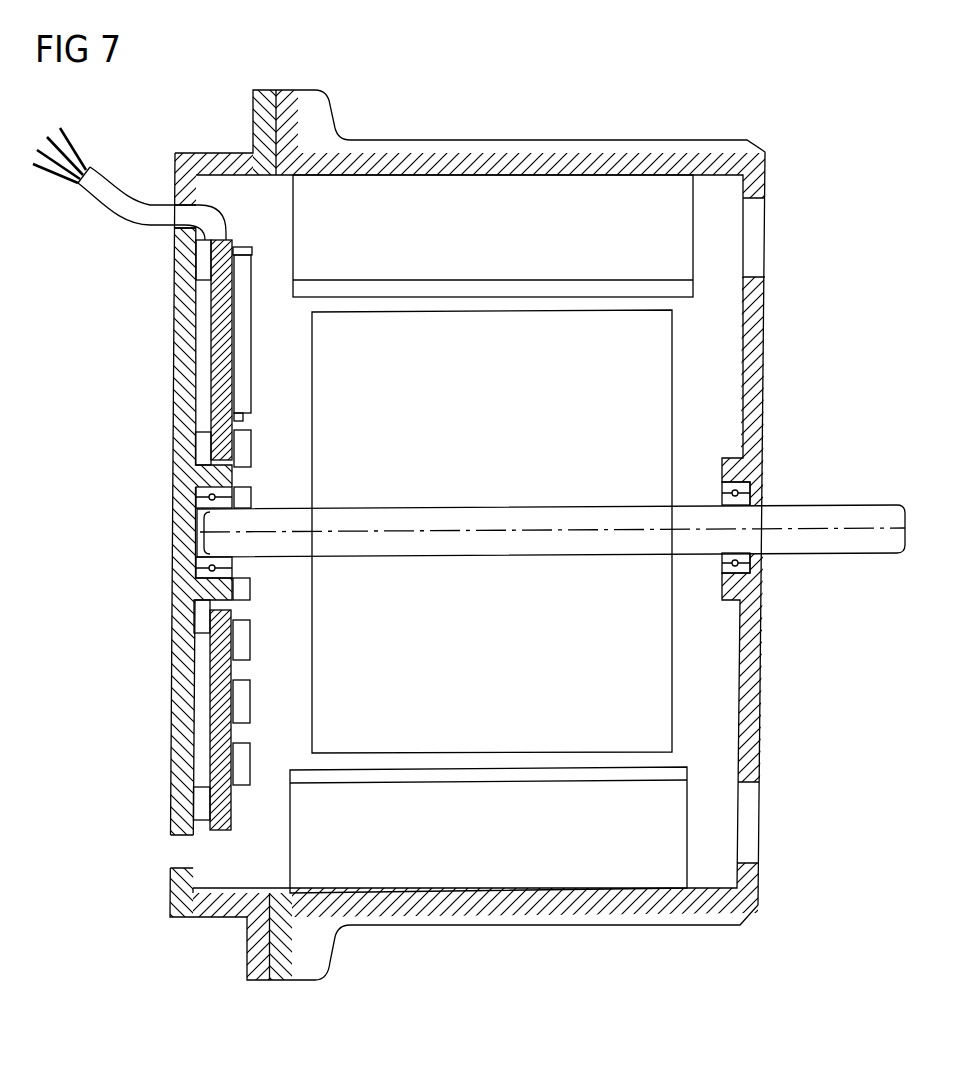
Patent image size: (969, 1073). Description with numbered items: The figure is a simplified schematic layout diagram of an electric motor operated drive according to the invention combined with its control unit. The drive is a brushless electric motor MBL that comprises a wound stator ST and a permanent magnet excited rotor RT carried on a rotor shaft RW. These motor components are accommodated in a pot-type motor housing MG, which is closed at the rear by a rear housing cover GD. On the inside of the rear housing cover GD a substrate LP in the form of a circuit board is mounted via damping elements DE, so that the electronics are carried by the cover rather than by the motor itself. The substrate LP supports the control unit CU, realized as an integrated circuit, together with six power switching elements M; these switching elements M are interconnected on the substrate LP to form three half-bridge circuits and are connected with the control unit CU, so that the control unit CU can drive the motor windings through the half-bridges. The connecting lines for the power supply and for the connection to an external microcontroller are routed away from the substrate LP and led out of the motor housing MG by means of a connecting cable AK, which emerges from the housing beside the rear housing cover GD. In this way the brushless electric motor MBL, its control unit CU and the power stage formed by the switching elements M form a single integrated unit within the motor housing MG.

The brushless electric motor MBL is at (731, 969).
The connecting cable AK is at (153, 206).
The control unit CU is at (250, 247).
The substrate LP is at (232, 350).
The power switching elements M is at (252, 495).
The rear housing cover GD is at (174, 524).
The motor housing MG is at (501, 176).
The rotor shaft RW is at (497, 507).
The rotor RT is at (492, 531).
The stator ST is at (488, 830).
The damping elements DE is at (203, 826).